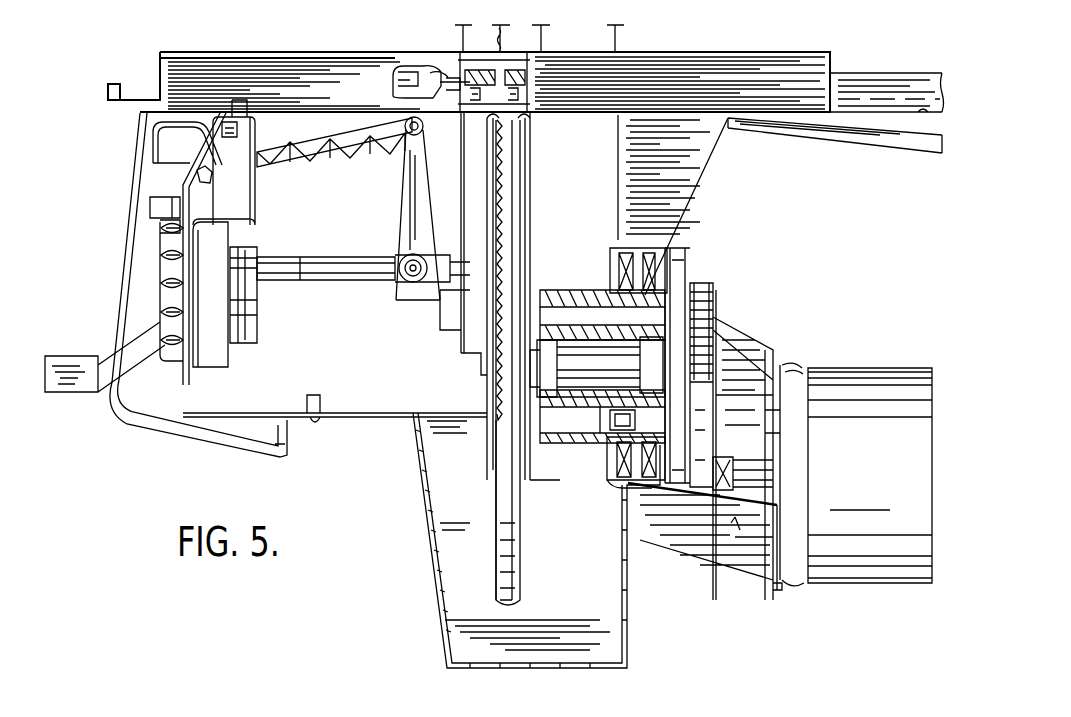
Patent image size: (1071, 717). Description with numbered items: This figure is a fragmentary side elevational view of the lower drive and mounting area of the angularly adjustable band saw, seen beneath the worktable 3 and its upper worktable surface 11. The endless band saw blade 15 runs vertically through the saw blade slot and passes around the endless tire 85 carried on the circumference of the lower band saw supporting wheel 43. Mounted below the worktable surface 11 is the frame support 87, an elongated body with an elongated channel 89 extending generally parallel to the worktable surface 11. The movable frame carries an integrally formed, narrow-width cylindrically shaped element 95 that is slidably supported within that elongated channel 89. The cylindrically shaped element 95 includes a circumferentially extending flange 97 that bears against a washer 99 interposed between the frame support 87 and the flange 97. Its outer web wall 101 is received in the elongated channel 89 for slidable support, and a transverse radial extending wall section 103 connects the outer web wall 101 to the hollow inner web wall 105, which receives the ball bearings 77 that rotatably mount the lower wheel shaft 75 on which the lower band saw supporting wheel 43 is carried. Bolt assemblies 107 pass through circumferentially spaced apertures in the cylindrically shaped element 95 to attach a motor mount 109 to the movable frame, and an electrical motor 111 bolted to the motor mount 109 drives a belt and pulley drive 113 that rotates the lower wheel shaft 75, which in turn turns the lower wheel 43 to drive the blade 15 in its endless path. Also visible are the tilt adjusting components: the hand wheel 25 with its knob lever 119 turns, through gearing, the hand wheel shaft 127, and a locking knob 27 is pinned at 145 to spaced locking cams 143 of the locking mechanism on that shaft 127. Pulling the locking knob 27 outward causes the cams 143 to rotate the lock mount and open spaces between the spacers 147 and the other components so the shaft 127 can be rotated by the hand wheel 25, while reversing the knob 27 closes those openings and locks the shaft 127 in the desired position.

The worktable 3 is at (846, 64).
The upper worktable surface 11 is at (768, 51).
The endless band saw blade 15 is at (494, 389).
The hand wheel 25 is at (158, 240).
The locking knob 27 is at (170, 142).
The lower band saw supporting wheel 43 is at (497, 574).
The lower wheel shaft 75 is at (632, 366).
The ball bearings 77 is at (553, 376).
The endless tire 85 is at (503, 546).
The frame support 87 is at (640, 295).
The elongated channel 89 is at (665, 300).
The cylindrically shaped element 95 is at (608, 244).
The circumferentially extending flange 97 is at (617, 253).
The washer 99 is at (618, 276).
The outer web wall 101 is at (602, 309).
The transverse radial extending wall section 103 is at (585, 318).
The hollow inner web wall 105 is at (604, 325).
The bolt assemblies 107 is at (630, 418).
The motor mount 109 is at (738, 533).
The electrical motor 111 is at (888, 330).
The belt and pulley drive 113 is at (713, 276).
The knob lever 119 is at (90, 369).
The hand wheel shaft 127 is at (345, 272).
The locking cams 143 is at (405, 219).
The pin 145 is at (410, 134).
The spacers 147 is at (468, 272).